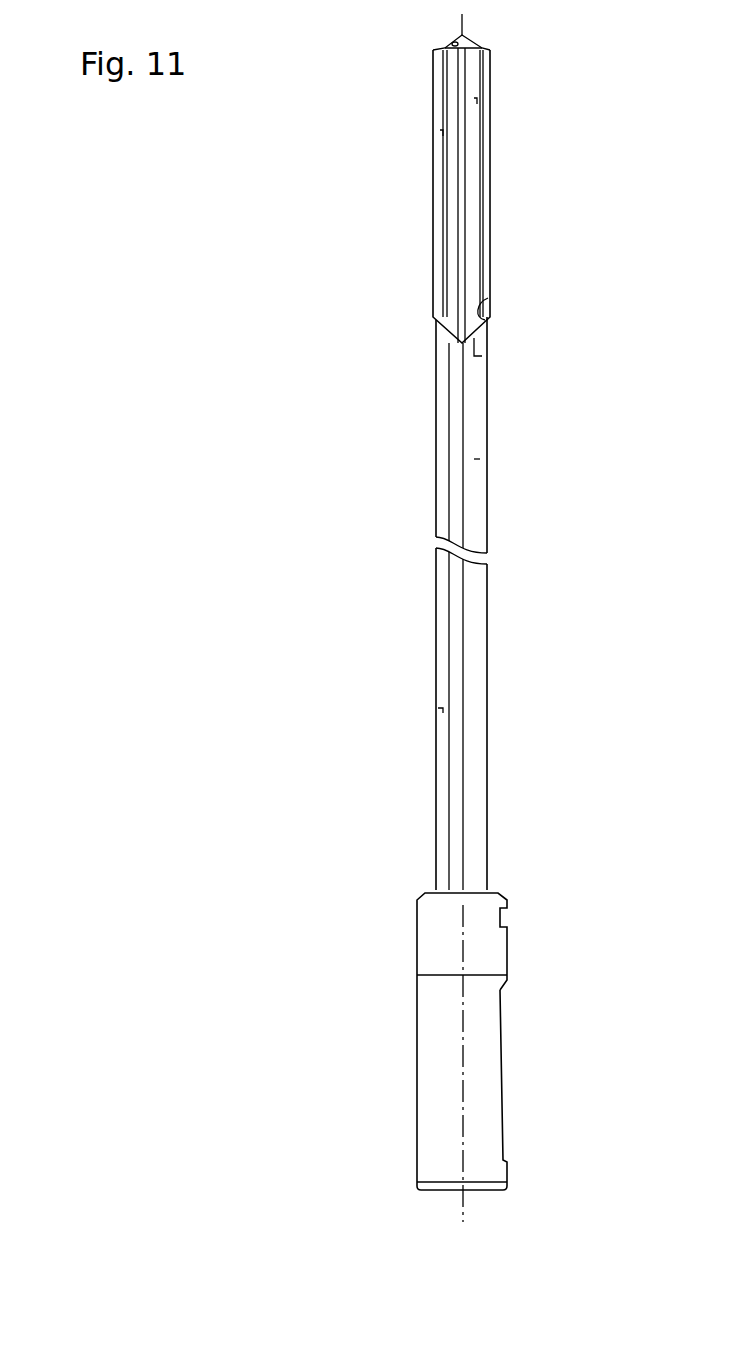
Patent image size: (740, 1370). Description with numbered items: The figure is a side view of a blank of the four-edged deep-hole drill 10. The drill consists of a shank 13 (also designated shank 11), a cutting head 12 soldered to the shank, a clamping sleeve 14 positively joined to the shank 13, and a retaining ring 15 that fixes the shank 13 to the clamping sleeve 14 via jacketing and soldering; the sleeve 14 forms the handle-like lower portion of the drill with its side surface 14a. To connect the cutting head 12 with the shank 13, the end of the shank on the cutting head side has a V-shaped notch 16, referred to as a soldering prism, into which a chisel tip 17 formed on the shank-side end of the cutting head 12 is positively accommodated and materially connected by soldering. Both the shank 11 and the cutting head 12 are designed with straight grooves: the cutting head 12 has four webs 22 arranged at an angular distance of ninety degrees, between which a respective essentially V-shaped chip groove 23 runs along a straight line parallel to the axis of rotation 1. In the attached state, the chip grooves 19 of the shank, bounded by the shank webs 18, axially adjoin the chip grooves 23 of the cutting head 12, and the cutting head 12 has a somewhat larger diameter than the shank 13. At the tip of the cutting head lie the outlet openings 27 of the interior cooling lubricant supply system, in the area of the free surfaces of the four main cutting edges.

The axis of rotation 1 is at (470, 1083).
The four-edged deep-hole drill 10 is at (372, 608).
The shank 11 is at (492, 40).
The cutting head 12 is at (430, 220).
The shank 13 is at (490, 492).
The clamping sleeve 14 is at (408, 1035).
The handle surface 14a is at (502, 1010).
The retaining ring 15 is at (410, 936).
The V-shaped notch 16 is at (488, 353).
The chisel tip 17 is at (488, 300).
The channel wall 18 is at (490, 426).
The chip grooves of the shank 19 is at (490, 457).
The webs 22 is at (445, 97).
The chip groove 23 is at (440, 131).
The outlet openings 27 is at (448, 43).